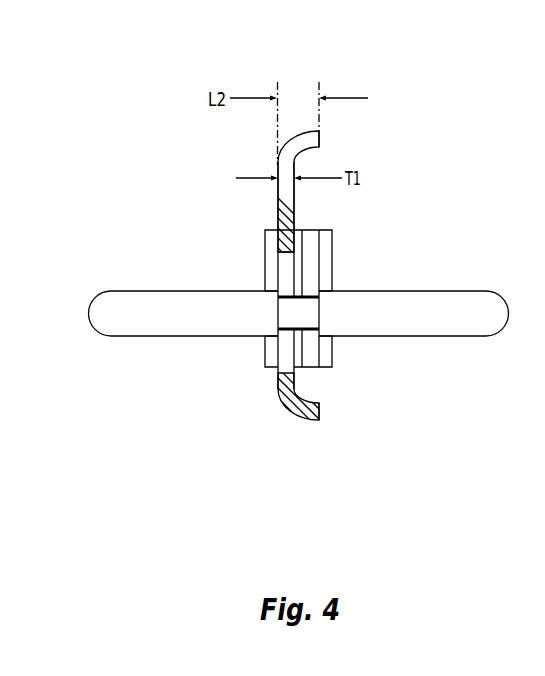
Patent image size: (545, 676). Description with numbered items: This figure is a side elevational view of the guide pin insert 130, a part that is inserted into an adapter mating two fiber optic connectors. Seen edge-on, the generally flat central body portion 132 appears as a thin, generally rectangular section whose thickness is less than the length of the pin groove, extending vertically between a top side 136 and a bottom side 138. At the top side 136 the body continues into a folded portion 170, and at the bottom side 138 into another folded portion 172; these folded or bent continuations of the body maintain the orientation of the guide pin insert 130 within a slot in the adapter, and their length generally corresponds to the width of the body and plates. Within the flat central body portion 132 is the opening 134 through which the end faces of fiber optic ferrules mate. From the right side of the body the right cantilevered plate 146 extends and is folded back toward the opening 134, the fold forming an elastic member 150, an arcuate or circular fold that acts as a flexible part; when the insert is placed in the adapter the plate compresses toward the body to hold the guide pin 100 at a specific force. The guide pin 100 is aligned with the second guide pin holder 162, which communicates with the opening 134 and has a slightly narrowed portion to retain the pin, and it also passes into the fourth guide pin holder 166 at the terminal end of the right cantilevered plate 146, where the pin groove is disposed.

The guide pin 100 is at (488, 290).
The guide pin insert 130 is at (357, 123).
The flat central body portion 132 is at (277, 208).
The opening 134 is at (287, 257).
The top side 136 is at (291, 122).
The bottom side 138 is at (288, 433).
The right cantilevered plate 146 is at (312, 230).
The elastic member 150 is at (326, 244).
The second guide pin holder 162 is at (288, 295).
The fourth guide pin holder 166 is at (317, 289).
The folded portion 170 is at (320, 134).
The folded portion 172 is at (321, 411).